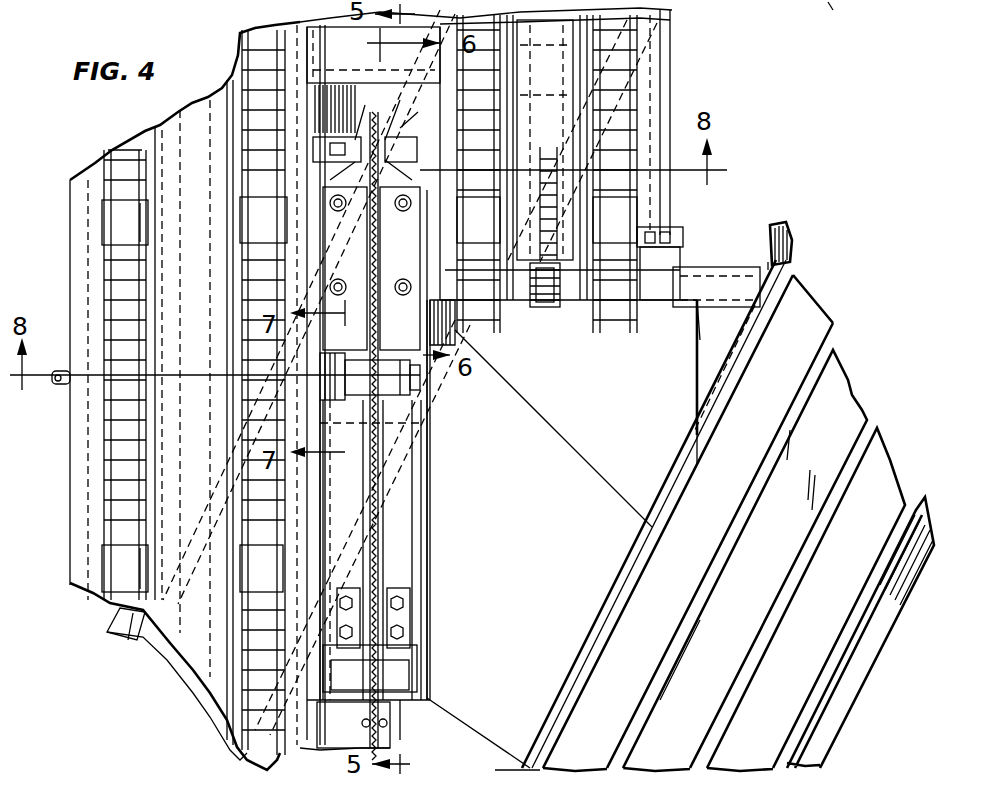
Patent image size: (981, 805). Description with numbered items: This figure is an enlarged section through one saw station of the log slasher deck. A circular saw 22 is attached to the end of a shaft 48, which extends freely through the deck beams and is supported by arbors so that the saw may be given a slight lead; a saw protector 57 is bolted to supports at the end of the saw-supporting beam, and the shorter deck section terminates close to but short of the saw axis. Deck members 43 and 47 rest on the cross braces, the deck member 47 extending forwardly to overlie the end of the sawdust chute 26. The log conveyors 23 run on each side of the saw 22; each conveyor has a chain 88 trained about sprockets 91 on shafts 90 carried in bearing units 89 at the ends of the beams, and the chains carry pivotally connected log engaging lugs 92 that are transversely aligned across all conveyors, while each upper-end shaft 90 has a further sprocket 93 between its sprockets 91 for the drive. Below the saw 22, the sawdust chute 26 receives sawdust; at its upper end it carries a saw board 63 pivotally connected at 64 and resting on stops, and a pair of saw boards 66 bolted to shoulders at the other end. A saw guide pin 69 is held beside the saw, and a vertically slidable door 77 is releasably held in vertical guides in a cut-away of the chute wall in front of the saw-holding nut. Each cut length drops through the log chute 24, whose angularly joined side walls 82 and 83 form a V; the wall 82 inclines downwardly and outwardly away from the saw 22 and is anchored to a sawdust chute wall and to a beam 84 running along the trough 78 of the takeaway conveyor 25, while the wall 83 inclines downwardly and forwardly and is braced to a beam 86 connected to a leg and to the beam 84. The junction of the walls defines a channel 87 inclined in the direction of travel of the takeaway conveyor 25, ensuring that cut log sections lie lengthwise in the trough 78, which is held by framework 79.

The circular saw 22 is at (377, 548).
The conveyor 23 is at (477, 97).
The log chute 24 is at (700, 340).
The takeaway conveyor 25 is at (862, 393).
The sawdust chute 26 is at (433, 612).
The deck member 43 is at (187, 123).
The deck member 47 is at (325, 28).
The shaft 48 is at (62, 388).
The saw protector 57 is at (377, 675).
The saw board 63 is at (400, 570).
The pivotal connection 64 is at (410, 670).
The saw board 66 is at (470, 337).
The saw guide pin 69 is at (373, 55).
The vertically slidable door 77 is at (430, 392).
The trough 78 is at (790, 248).
The framework 79 is at (841, 19).
The side wall 82 is at (605, 592).
The side wall 83 is at (672, 460).
The beam 84 is at (765, 250).
The beam 86 is at (725, 270).
The channel 87 is at (585, 452).
The chain 88 is at (108, 462).
The bearing unit 89 is at (662, 283).
The shaft 90 is at (577, 267).
The sprocket 91 is at (615, 287).
The log engaging lug 92 is at (113, 226).
The sprocket 93 is at (560, 293).